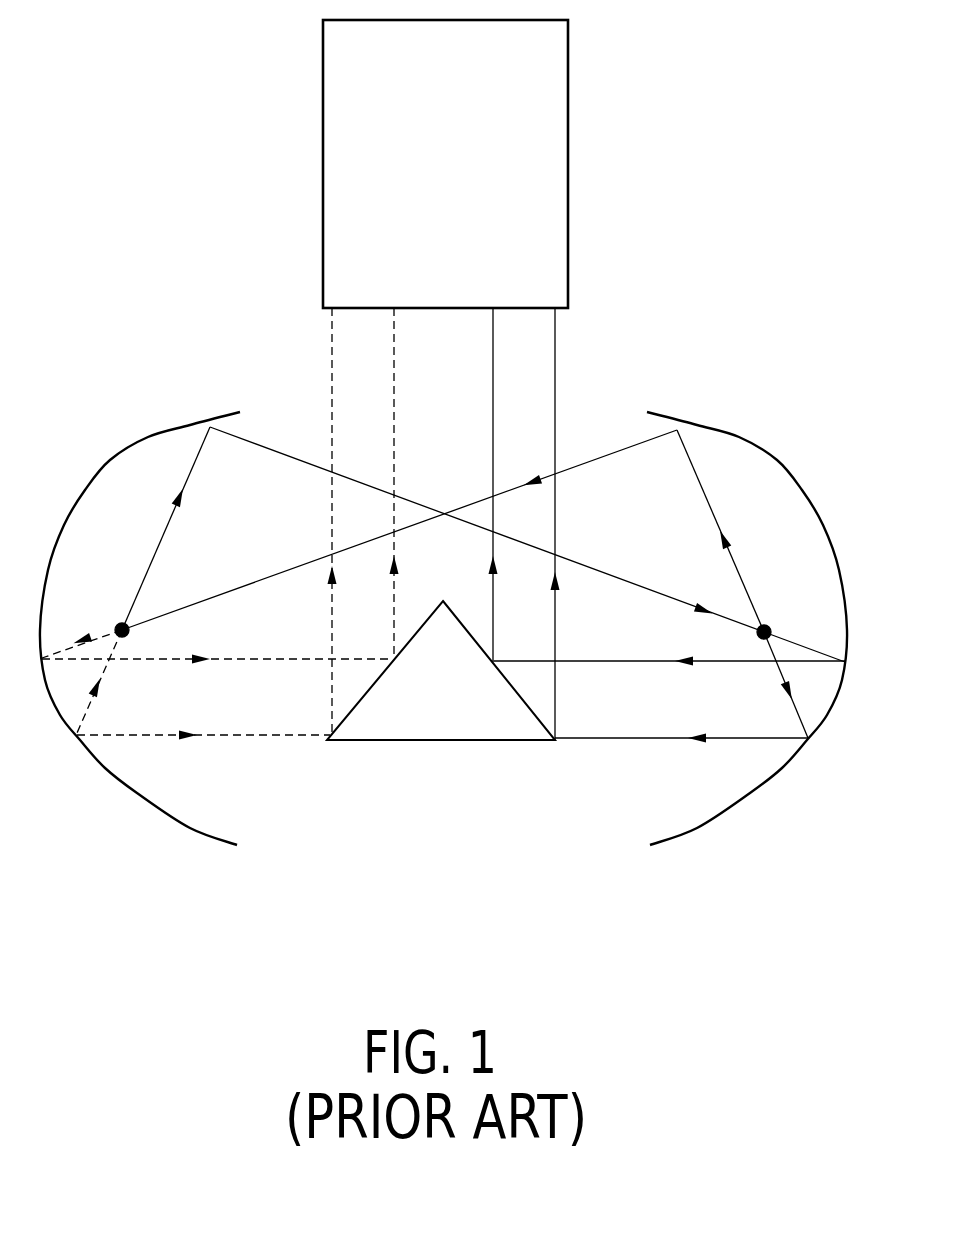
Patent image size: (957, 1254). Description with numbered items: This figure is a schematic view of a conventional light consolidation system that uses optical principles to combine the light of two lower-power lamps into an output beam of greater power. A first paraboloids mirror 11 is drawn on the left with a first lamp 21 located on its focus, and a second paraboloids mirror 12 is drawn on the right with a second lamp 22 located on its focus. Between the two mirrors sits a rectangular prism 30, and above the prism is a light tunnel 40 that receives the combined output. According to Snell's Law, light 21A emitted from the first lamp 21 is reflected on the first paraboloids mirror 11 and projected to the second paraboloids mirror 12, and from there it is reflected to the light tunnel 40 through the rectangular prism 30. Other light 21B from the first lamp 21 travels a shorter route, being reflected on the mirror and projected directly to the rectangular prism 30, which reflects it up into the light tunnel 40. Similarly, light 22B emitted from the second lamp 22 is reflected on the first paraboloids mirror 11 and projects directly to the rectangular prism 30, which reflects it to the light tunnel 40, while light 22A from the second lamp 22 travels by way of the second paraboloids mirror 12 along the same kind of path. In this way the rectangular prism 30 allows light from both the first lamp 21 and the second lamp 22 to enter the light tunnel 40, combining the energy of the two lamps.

The first paraboloids mirror 11 is at (136, 438).
The second paraboloids mirror 12 is at (752, 445).
The first lamp 21 is at (119, 624).
The second lamp 22 is at (769, 627).
The light emitted from the first lamp 21A is at (492, 406).
The light emitted from the first lamp 21B is at (332, 356).
The light emitted from the second lamp 22A is at (395, 465).
The light emitted from the second lamp 22B is at (555, 400).
The rectangular prism 30 is at (473, 742).
The light tunnel 40 is at (323, 98).